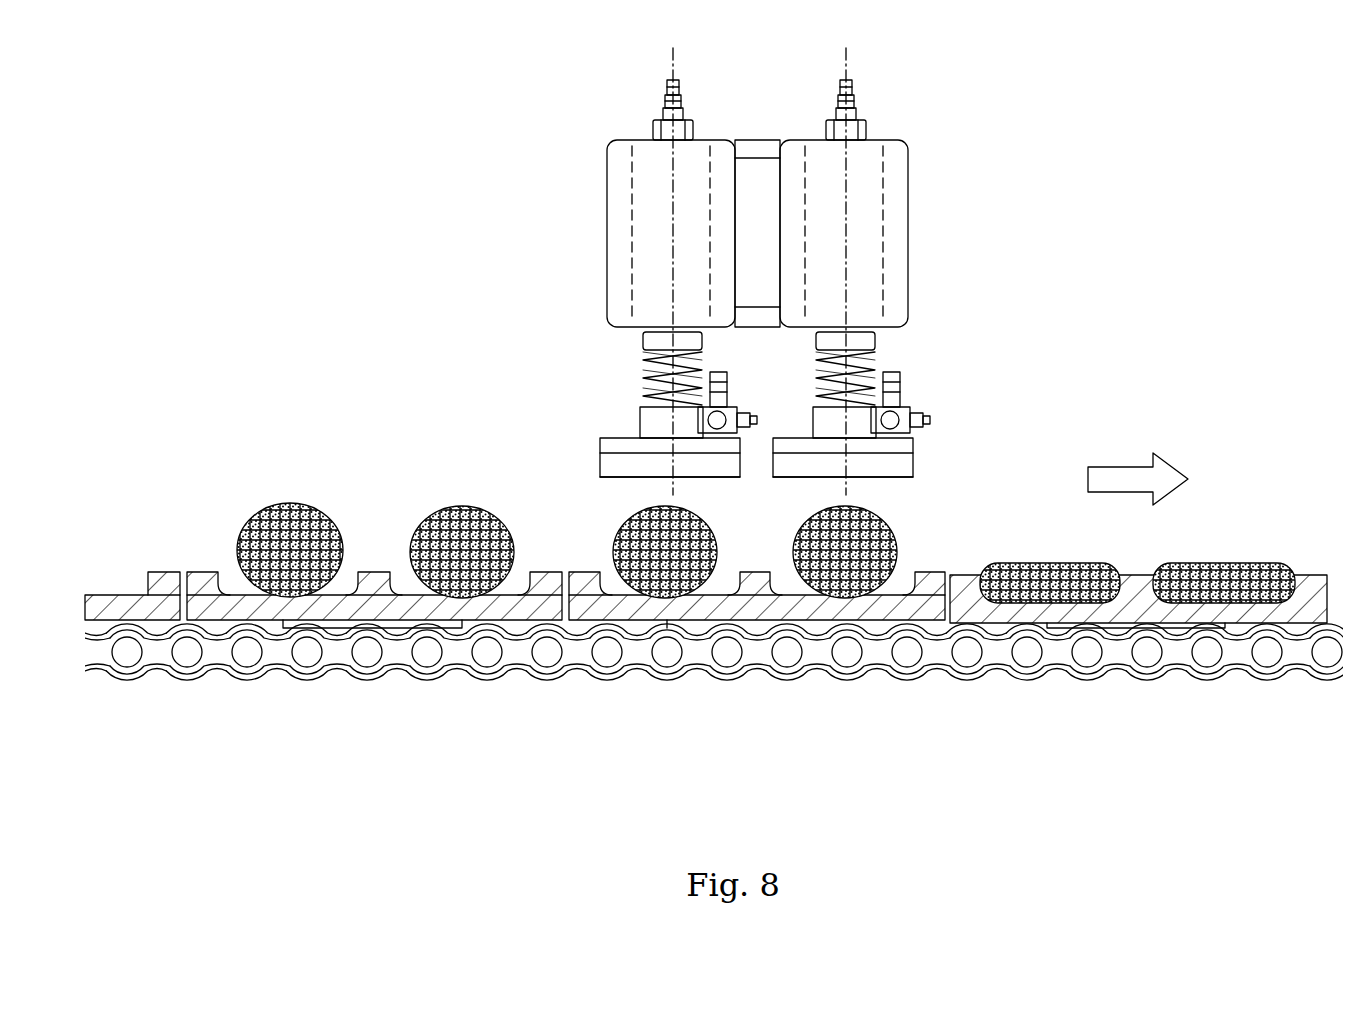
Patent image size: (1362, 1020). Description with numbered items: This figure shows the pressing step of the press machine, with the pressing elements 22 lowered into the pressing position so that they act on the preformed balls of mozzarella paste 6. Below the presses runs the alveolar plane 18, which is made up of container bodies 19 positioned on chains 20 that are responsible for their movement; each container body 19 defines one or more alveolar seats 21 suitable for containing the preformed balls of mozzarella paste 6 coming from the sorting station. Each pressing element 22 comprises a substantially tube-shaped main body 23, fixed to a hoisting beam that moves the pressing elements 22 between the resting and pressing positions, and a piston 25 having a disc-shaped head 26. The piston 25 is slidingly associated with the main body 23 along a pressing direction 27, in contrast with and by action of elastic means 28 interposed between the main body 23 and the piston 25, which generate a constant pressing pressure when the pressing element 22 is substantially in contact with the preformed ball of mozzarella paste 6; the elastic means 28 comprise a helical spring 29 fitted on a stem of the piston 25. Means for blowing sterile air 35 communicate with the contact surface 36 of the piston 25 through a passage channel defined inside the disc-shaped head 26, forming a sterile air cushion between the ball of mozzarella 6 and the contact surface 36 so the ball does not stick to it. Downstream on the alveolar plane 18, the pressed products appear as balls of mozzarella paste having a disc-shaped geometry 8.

The preformed ball of mozzarella paste 6 is at (313, 500).
The ball of mozzarella paste having a disc-shaped geometry 8 is at (1068, 560).
The alveolar plane 18 is at (203, 567).
The container body 19 is at (170, 592).
The chain 20 is at (427, 695).
The alveolar seat 21 is at (145, 592).
The pressing element 22 is at (597, 222).
The main body 23 is at (633, 235).
The piston 25 is at (645, 393).
The disc-shaped head 26 is at (607, 446).
The pressing direction 27 is at (665, 62).
The elastic means 28 is at (640, 356).
The helical spring 29 is at (647, 385).
The means for blowing sterile air 35 is at (737, 405).
The contact surface 36 is at (608, 485).